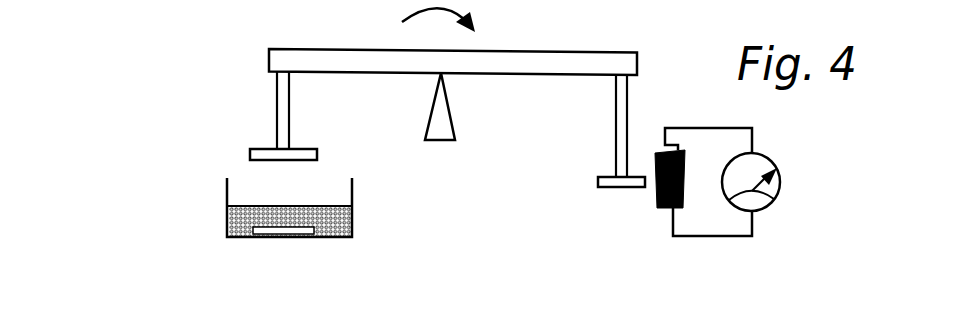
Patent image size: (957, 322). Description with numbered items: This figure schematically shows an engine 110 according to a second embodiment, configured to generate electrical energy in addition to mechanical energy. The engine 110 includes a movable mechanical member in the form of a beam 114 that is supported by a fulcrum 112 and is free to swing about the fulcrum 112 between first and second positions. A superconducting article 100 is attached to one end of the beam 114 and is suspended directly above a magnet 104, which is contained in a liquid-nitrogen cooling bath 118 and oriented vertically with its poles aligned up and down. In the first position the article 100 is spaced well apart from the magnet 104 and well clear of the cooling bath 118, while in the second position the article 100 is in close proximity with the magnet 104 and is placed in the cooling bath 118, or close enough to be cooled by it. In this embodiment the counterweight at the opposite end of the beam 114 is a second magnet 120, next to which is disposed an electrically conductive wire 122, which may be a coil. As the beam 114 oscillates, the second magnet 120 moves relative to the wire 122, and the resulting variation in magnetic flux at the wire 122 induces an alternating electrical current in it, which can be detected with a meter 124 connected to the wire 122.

The superconducting article 100 is at (288, 231).
The magnet 104 is at (252, 157).
The engine 110 is at (222, 97).
The fulcrum 112 is at (445, 123).
The beam 114 is at (318, 64).
The liquid-nitrogen cooling bath 118 is at (340, 213).
The second magnet 120 is at (618, 188).
The electrically conductive wire 122 is at (666, 208).
The meter 124 is at (756, 185).